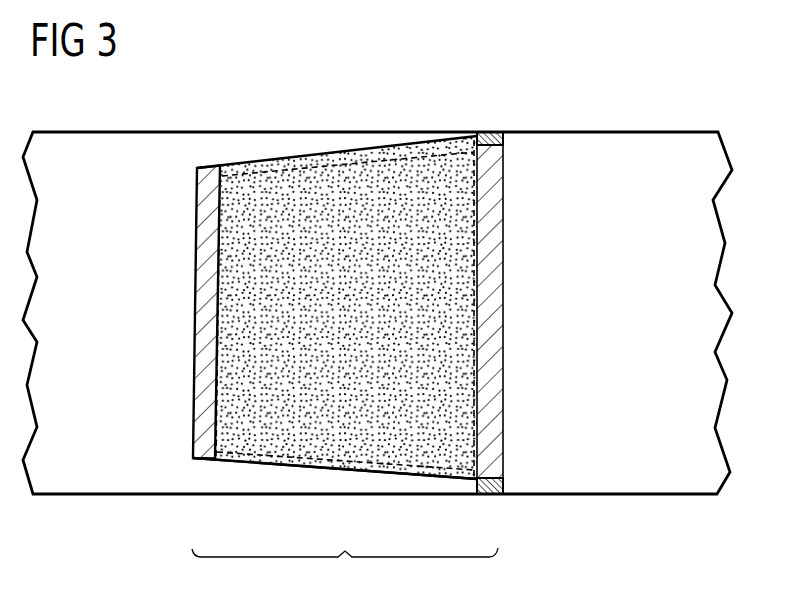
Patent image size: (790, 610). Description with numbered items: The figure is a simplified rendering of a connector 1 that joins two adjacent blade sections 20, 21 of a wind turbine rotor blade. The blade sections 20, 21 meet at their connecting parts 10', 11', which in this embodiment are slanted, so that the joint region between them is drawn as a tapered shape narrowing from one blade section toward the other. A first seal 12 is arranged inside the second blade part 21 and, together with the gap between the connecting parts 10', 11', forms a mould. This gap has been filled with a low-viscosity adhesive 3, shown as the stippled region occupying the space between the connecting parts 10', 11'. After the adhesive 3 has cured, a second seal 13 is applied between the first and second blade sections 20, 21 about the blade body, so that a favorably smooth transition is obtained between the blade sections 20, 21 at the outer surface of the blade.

The connector 1 is at (345, 574).
The low-viscosity adhesive 3 is at (370, 155).
The connecting part 10' is at (406, 501).
The connecting part 11' is at (264, 506).
The first seal 12 is at (210, 262).
The second seal 13 is at (491, 131).
The blade section 20 is at (615, 482).
The blade section 21 is at (107, 483).